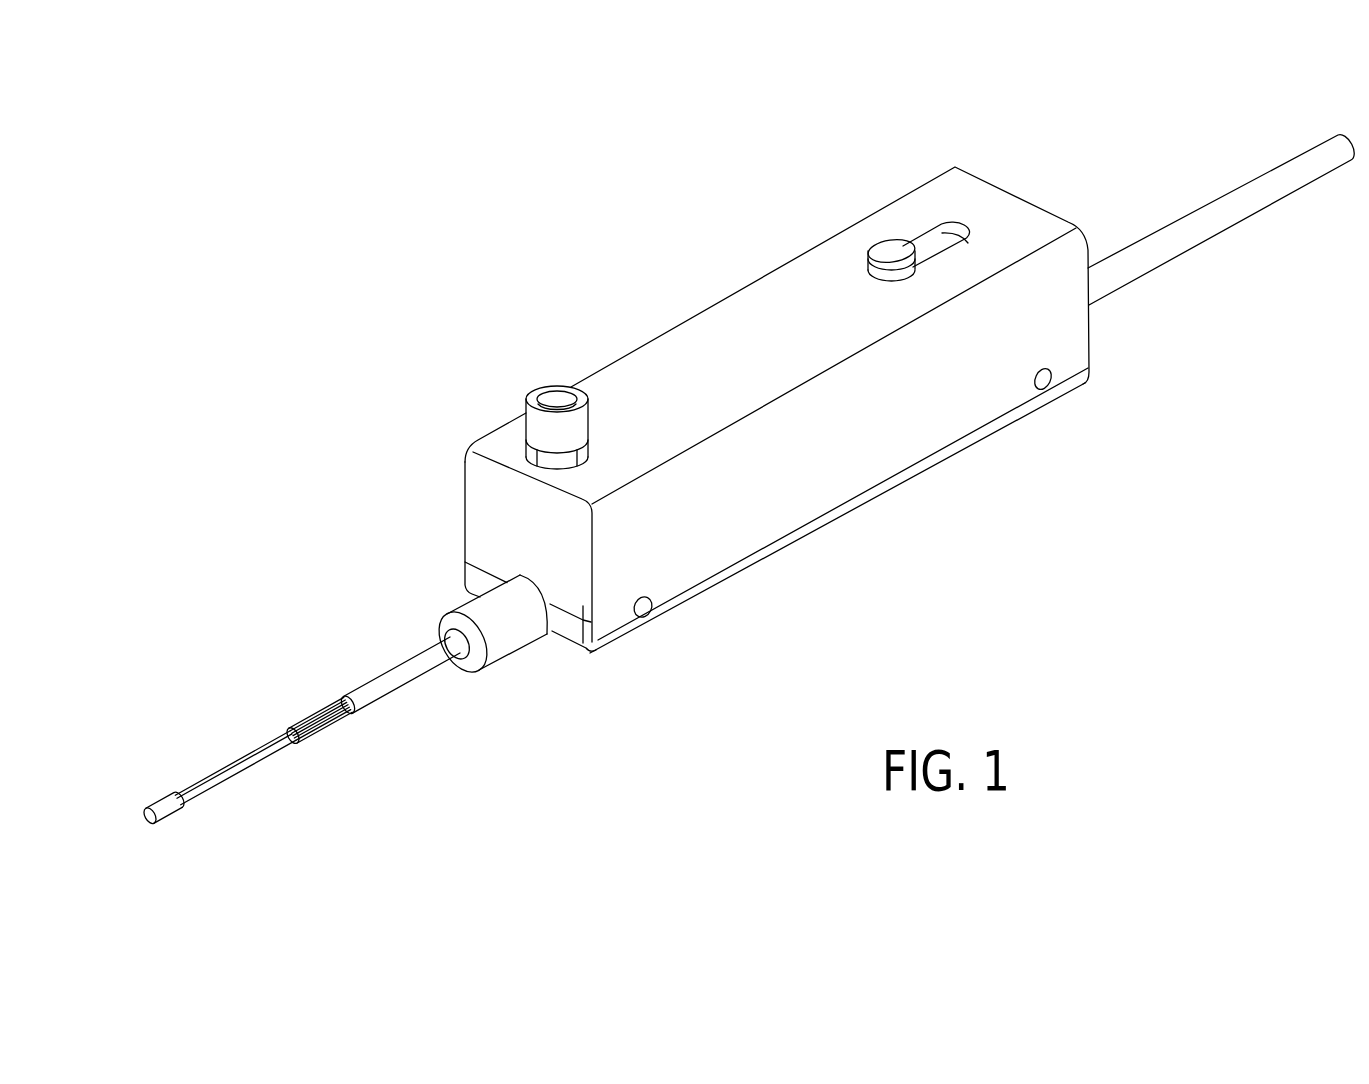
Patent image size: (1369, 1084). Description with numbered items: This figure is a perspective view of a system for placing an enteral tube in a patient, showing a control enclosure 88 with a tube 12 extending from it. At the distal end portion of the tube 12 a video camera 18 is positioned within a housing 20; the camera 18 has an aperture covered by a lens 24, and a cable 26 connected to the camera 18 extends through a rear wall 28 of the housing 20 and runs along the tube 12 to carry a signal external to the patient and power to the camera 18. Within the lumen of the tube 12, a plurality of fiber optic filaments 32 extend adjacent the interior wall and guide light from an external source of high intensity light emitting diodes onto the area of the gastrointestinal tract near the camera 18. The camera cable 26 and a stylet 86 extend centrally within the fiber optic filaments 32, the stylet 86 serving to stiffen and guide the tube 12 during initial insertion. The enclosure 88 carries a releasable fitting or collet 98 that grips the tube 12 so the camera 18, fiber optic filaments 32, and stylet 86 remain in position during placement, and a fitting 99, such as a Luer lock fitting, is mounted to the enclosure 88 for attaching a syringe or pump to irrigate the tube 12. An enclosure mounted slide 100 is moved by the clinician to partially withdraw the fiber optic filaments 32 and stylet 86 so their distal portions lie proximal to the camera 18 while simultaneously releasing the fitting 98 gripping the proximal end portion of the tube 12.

The tube 12 is at (380, 679).
The video camera 18 is at (152, 795).
The housing 20 is at (158, 803).
The lens 24 is at (147, 818).
The cable 26 is at (248, 770).
The rear wall 28 is at (177, 792).
The fiber optic filaments 32 is at (309, 737).
The stylet 86 is at (255, 751).
The enclosure 88 is at (1027, 200).
The releasable fitting or collet 98 is at (503, 652).
The fitting 99 is at (542, 388).
The slide 100 is at (878, 245).